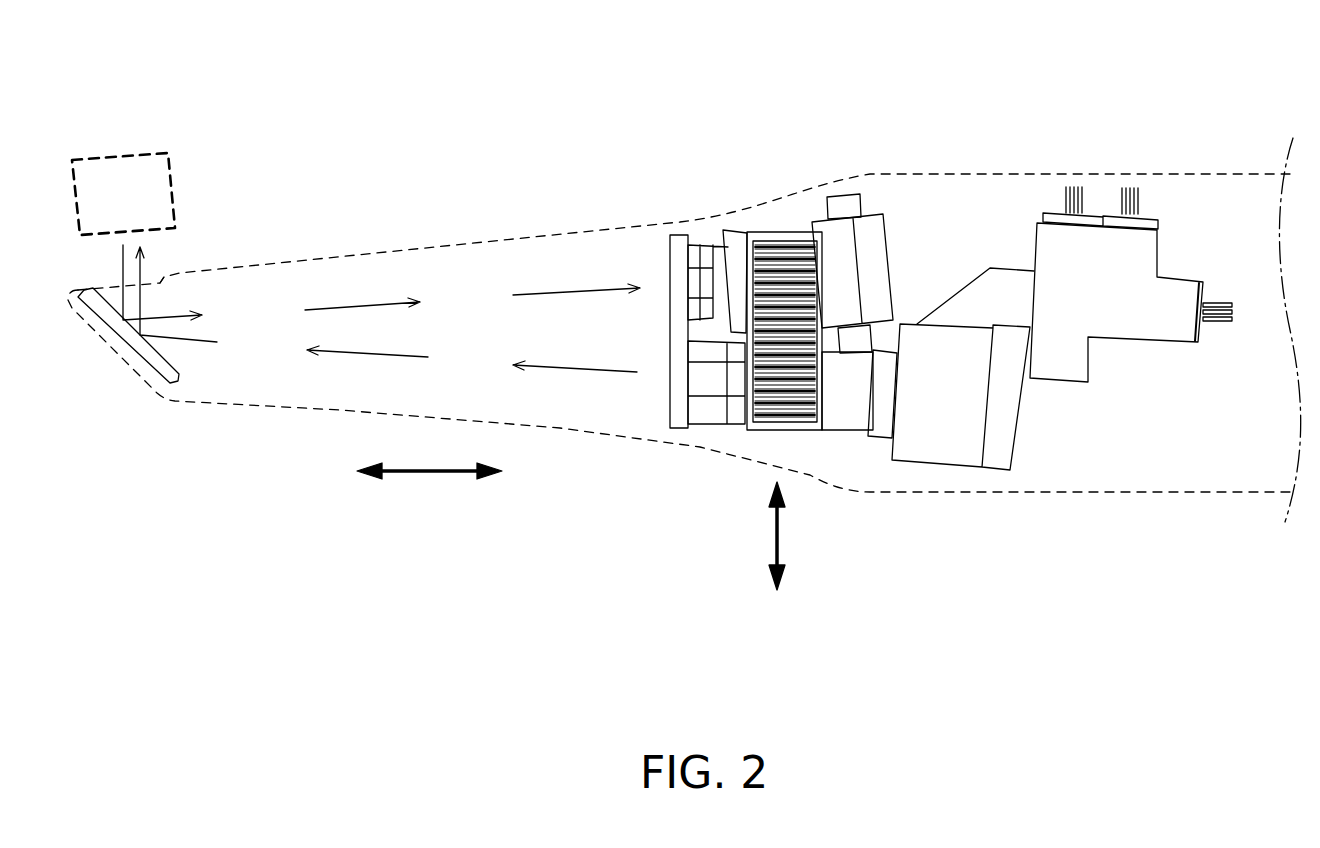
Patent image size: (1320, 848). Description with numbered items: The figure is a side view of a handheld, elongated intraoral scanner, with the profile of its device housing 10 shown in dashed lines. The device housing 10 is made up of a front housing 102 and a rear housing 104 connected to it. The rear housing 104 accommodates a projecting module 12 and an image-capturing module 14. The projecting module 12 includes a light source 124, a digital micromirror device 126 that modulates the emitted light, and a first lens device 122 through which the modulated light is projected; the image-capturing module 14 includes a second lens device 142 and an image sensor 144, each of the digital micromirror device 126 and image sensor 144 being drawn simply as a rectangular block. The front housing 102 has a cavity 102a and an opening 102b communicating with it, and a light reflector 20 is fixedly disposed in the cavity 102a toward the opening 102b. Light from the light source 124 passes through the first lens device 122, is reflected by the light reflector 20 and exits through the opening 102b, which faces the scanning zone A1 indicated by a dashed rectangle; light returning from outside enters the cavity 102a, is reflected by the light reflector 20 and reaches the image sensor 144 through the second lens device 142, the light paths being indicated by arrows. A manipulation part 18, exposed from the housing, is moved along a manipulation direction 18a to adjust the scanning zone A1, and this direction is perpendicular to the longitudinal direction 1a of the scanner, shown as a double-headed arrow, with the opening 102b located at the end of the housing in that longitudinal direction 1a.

The device housing 10 is at (684, 286).
The front housing 102 is at (390, 253).
The cavity 102a is at (483, 288).
The opening 102b is at (162, 276).
The rear housing 104 is at (1172, 170).
The light reflector 20 is at (128, 335).
The scanning zone A1 is at (132, 155).
The longitudinal direction 1a is at (429, 484).
The image-capturing module 14 is at (823, 223).
The second lens device 142 is at (738, 242).
The image sensor 144 is at (894, 212).
The manipulation part 18 is at (775, 397).
The manipulation direction 18a is at (755, 536).
The projecting module 12 is at (1027, 411).
The first lens device 122 is at (845, 410).
The light source 124 is at (1138, 382).
The digital micromirror device 126 is at (1005, 420).